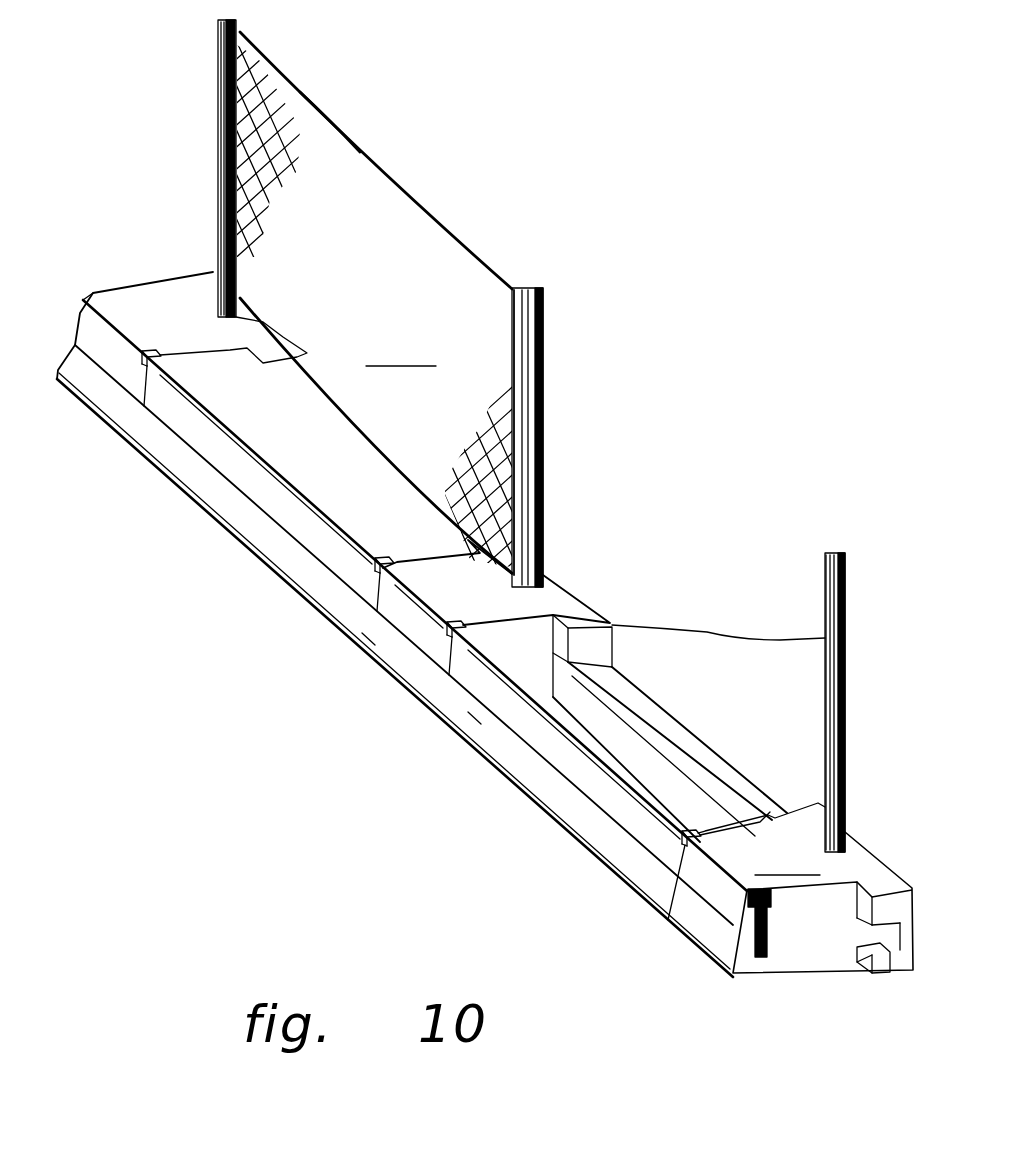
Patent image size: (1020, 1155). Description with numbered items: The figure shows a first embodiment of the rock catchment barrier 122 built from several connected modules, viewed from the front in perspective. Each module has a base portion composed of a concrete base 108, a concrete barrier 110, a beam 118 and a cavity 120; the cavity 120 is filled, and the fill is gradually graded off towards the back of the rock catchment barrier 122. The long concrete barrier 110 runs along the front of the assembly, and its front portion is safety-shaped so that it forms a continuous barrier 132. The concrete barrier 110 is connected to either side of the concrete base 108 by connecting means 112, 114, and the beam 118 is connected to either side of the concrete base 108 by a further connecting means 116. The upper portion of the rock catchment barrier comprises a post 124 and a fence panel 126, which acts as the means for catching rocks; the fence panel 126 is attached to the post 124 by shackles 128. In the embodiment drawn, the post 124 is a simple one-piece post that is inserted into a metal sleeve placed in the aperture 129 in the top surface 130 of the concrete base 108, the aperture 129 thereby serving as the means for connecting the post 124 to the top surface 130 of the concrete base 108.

The concrete base 108 is at (160, 300).
The concrete barrier 110 is at (250, 515).
The means for connecting the concrete barrier to the concrete base 112 is at (142, 380).
The means for connecting the concrete barrier to the concrete base 114 is at (748, 908).
The means for connecting the concrete beam to the concrete base 116 is at (613, 648).
The beam 118 is at (737, 797).
The cavity 120 is at (647, 770).
The rock catchment barrier 122 is at (345, 318).
The post 124 is at (240, 22).
The fence panel 126 is at (340, 135).
The shackles 128 is at (512, 288).
The aperture 129 is at (852, 847).
The top surface 130 is at (805, 888).
The continuous barrier 132 is at (370, 642).